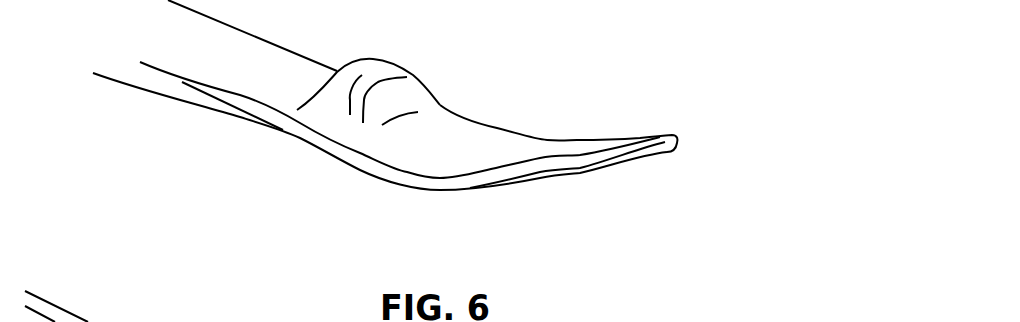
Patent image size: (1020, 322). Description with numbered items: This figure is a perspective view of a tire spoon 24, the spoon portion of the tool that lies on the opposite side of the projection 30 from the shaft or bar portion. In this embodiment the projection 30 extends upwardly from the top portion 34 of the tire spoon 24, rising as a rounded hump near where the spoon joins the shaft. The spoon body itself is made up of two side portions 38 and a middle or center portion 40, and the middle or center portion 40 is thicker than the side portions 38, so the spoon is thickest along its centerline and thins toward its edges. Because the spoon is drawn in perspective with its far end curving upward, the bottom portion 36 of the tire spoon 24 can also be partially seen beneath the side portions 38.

The spoon portion 24 is at (351, 161).
The projection 30 is at (405, 68).
The top portion 34 is at (475, 118).
The bottom portion 36 is at (513, 188).
The side portions 38 is at (577, 138).
The middle or center portion 40 is at (467, 147).